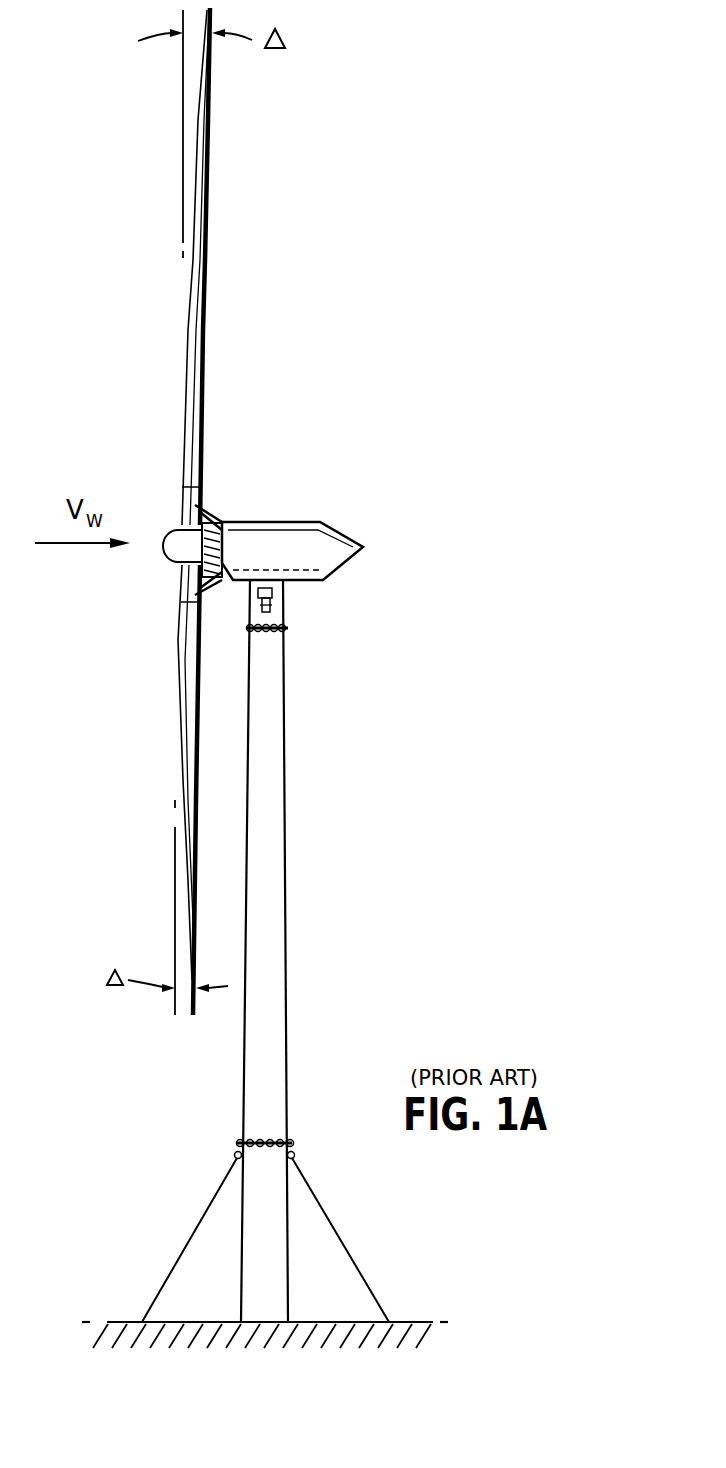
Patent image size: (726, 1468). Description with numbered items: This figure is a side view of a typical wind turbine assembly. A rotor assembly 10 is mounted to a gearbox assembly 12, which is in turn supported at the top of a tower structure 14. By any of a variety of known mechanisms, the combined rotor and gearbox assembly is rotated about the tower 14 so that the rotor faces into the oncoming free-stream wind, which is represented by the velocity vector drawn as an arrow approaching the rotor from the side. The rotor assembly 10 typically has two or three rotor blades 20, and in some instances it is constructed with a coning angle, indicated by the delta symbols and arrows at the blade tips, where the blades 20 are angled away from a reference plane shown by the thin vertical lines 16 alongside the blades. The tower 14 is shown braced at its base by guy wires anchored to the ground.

The rotor assembly 10 is at (228, 480).
The gearbox assembly 12 is at (316, 490).
The tower structure 14 is at (274, 1065).
The reference plane line (unconed rotor plane) 16 is at (183, 173).
The rotor blades 20 is at (200, 305).